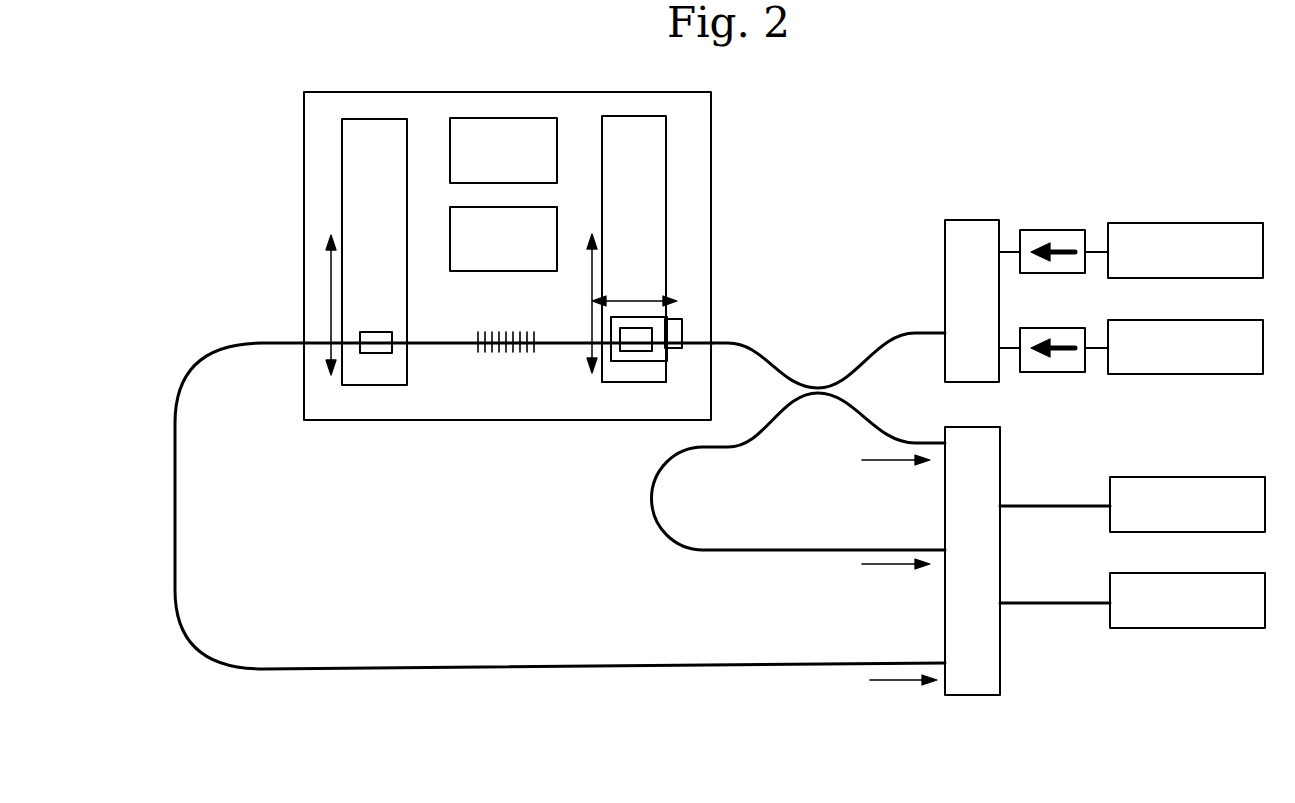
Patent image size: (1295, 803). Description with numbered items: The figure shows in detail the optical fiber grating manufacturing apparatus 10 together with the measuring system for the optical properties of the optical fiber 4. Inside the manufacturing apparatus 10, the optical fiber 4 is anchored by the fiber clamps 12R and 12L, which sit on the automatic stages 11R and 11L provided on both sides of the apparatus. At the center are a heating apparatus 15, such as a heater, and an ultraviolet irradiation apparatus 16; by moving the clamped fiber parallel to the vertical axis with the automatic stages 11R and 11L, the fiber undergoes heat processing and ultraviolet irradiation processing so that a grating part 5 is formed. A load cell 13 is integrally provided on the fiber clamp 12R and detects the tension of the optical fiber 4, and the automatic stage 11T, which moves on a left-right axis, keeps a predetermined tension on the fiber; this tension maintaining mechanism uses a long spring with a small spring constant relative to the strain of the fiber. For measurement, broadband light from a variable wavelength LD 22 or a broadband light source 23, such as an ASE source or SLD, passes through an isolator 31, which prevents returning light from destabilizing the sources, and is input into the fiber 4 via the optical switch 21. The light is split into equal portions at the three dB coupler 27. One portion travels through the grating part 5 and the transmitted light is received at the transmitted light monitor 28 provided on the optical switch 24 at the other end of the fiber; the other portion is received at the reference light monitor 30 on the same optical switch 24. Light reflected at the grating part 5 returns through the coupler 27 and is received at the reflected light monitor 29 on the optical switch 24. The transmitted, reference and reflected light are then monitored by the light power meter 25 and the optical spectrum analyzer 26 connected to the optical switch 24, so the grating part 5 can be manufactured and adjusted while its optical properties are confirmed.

The optical fiber 4 is at (215, 366).
The grating part 5 is at (478, 346).
The optical fiber grating manufacturing apparatus 10 is at (820, 132).
The automatic stage 11L is at (344, 165).
The automatic stage 11R is at (667, 163).
The automatic stage 11T is at (638, 383).
The fiber clamp 12L is at (372, 354).
The fiber clamp 12R is at (625, 352).
The load cell 13 is at (682, 326).
The heating apparatus 15 is at (525, 117).
The ultraviolet irradiation apparatus 16 is at (558, 248).
The optical switch 21 is at (961, 221).
The variable wavelength LD 22 is at (1213, 223).
The broadband light source 23 is at (1213, 320).
The optical switch 24 is at (972, 696).
The light power meter 25 is at (1213, 477).
The optical spectrum analyzer 26 is at (1213, 573).
The 3 dB coupler 27 is at (799, 441).
The transmitted light monitor 28 is at (945, 687).
The reflected light monitor 29 is at (945, 510).
The reference light monitor 30 is at (945, 613).
The isolator 31 is at (1061, 246).